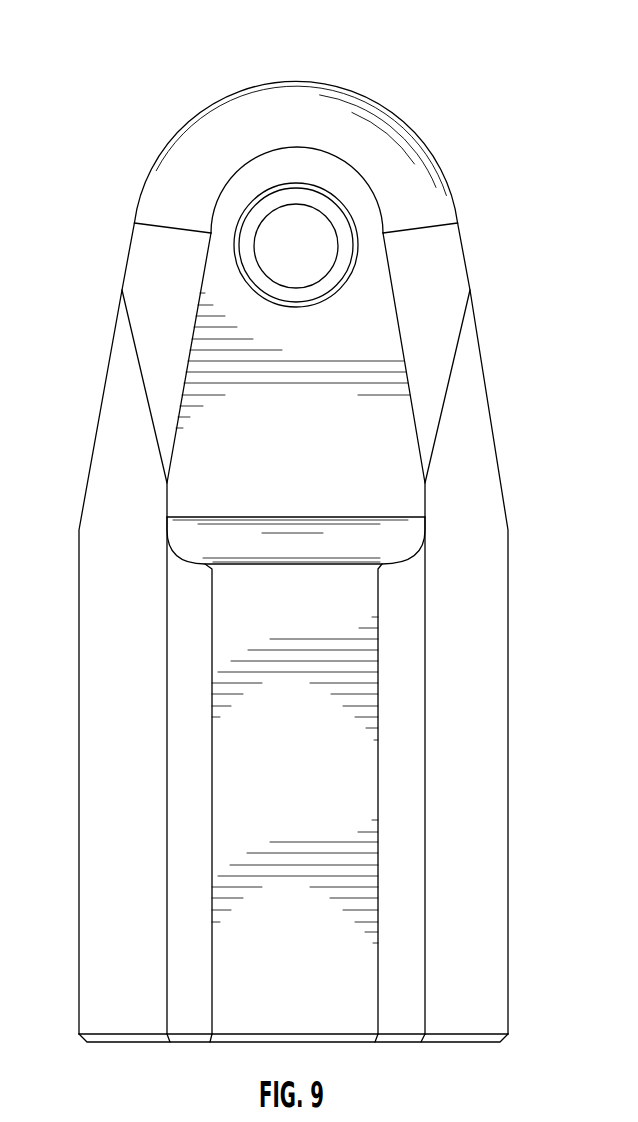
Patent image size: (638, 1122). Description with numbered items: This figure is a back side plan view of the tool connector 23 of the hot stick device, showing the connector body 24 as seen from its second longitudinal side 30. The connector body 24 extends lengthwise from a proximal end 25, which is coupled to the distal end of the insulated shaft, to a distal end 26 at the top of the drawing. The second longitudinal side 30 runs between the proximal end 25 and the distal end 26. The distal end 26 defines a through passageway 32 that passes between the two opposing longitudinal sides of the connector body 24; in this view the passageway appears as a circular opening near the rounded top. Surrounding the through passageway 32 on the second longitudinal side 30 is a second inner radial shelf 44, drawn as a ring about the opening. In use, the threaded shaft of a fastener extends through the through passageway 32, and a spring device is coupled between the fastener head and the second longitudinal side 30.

The tool connector 23 is at (503, 161).
The connector body 24 is at (540, 442).
The proximal end 25 is at (470, 867).
The distal end 26 is at (437, 282).
The second longitudinal side 30 is at (212, 462).
The through passageway 32 is at (296, 242).
The second inner radial shelf 44 is at (245, 248).